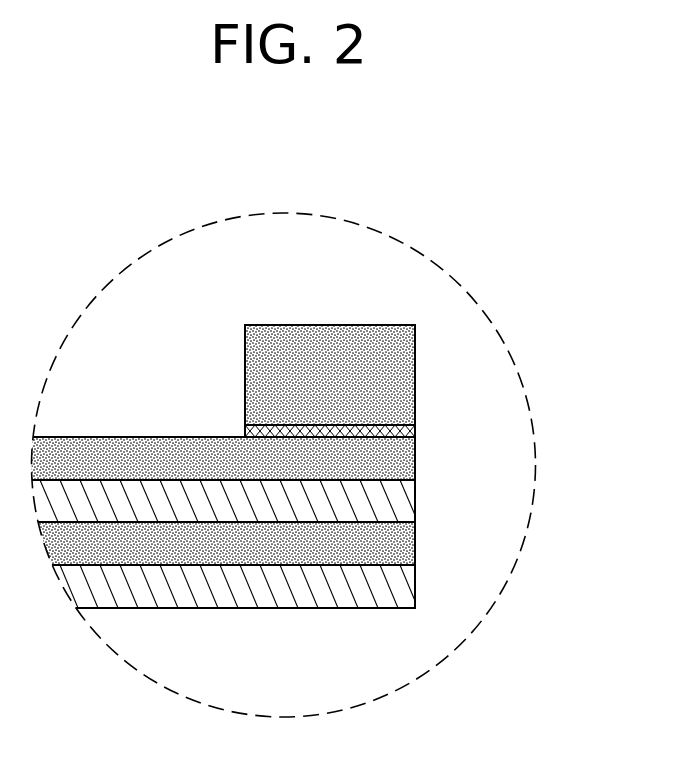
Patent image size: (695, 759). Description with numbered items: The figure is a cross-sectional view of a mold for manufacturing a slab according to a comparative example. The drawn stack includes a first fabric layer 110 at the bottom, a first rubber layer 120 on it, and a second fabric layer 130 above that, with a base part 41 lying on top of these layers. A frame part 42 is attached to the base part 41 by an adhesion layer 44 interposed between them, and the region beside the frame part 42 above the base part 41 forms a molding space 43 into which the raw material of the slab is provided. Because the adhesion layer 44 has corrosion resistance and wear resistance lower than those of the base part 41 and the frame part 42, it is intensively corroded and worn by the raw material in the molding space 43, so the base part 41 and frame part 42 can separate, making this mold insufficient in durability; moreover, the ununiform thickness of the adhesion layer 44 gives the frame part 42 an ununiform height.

The molding space 43 is at (150, 374).
The frame part 42 is at (402, 375).
The adhesion layer 44 is at (412, 428).
The base part 41 is at (402, 456).
The second fabric layer 130 is at (402, 500).
The first rubber layer 120 is at (402, 543).
The first fabric layer 110 is at (402, 585).